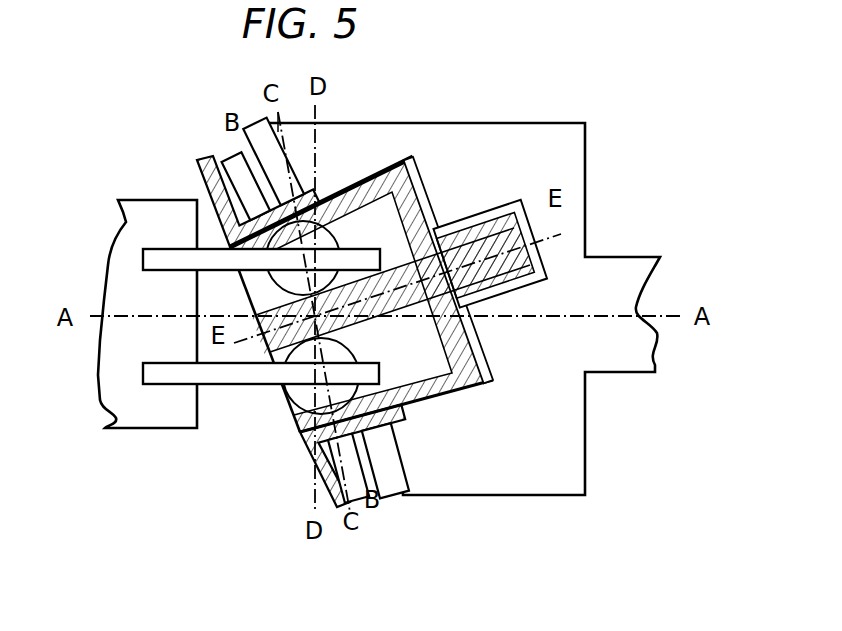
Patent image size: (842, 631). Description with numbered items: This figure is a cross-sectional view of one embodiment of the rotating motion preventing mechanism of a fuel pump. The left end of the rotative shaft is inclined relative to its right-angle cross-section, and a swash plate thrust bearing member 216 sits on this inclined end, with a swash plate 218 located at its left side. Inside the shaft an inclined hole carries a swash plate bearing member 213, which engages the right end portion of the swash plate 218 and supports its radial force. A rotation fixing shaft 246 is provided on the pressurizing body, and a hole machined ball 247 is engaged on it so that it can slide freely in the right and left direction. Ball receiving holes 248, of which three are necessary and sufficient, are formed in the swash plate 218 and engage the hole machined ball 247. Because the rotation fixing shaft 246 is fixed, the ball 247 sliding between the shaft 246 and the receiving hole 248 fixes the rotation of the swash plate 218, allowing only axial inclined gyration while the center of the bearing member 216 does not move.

The swash plate bearing member 213 is at (469, 212).
The swash plate thrust bearing member 216 is at (395, 467).
The swash plate 218 is at (206, 158).
The rotation fixing shaft 246 is at (238, 386).
The hole machined ball 247 is at (282, 406).
The ball receiving hole 248 is at (298, 448).